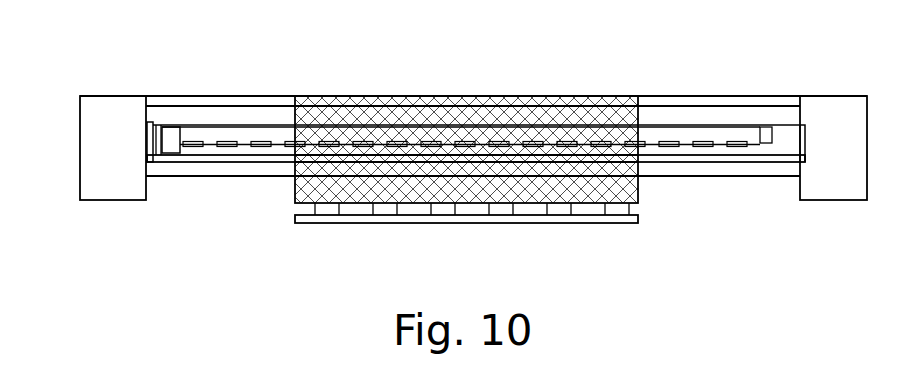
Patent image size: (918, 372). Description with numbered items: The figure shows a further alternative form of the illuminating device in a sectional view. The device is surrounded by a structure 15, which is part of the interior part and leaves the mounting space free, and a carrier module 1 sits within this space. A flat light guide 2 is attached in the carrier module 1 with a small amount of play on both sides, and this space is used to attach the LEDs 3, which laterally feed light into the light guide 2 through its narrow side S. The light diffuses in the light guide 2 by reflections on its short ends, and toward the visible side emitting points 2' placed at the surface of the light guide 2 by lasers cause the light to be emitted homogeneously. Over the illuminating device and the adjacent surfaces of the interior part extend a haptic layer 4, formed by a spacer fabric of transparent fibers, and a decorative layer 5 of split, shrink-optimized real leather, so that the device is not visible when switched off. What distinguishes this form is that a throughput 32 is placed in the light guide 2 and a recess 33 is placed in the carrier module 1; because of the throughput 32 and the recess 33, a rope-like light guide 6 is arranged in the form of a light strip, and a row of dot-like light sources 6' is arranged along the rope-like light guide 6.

The carrier module 1 is at (183, 163).
The flat light guide 2 is at (461, 83).
The emitting points 2' is at (746, 82).
The LEDs 3 is at (172, 130).
The haptic layer 4 is at (238, 118).
The decorative layer 5 is at (279, 99).
The rope-like light guide 6 is at (466, 112).
The row of light sources 6' is at (466, 247).
The structure 15 is at (823, 118).
The throughput 32 is at (318, 134).
The recess 33 is at (623, 163).
The narrow side S is at (150, 146).